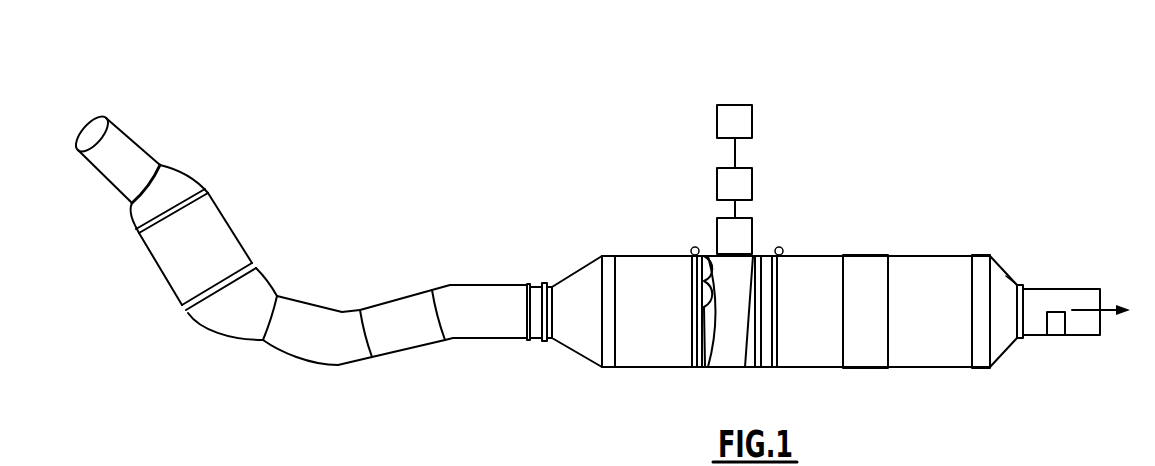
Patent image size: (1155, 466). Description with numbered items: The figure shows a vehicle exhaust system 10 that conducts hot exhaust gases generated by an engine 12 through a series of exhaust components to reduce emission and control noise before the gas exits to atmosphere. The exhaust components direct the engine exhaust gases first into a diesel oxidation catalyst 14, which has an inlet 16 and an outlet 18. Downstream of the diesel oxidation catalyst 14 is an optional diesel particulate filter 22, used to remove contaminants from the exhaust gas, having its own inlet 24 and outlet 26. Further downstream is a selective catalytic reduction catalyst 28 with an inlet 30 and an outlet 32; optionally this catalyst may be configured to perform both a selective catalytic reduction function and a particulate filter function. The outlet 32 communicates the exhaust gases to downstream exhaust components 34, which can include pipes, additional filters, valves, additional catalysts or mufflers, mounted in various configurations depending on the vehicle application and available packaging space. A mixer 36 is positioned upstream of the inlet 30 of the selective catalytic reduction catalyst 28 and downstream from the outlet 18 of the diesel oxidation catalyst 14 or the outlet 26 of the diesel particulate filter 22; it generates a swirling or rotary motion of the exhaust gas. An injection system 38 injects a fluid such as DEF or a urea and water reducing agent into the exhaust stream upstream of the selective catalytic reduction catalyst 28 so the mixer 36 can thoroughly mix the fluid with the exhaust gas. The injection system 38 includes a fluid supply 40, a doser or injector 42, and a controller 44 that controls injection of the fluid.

The vehicle exhaust system 10 is at (452, 142).
The engine 12 is at (95, 142).
The diesel oxidation catalyst 14 is at (228, 222).
The inlet 16 is at (207, 192).
The outlet 18 is at (254, 264).
The diesel particulate filter 22 is at (653, 367).
The inlet 24 is at (615, 367).
The outlet 26 is at (693, 367).
The selective catalytic reduction catalyst 28 is at (815, 256).
The inlet 30 is at (787, 367).
The outlet 32 is at (842, 367).
The downstream exhaust components 34 is at (967, 256).
The mixer 36 is at (766, 262).
The injection system 38 is at (688, 103).
The fluid supply 40 is at (749, 197).
The doser or injector 42 is at (749, 249).
The controller 44 is at (749, 135).